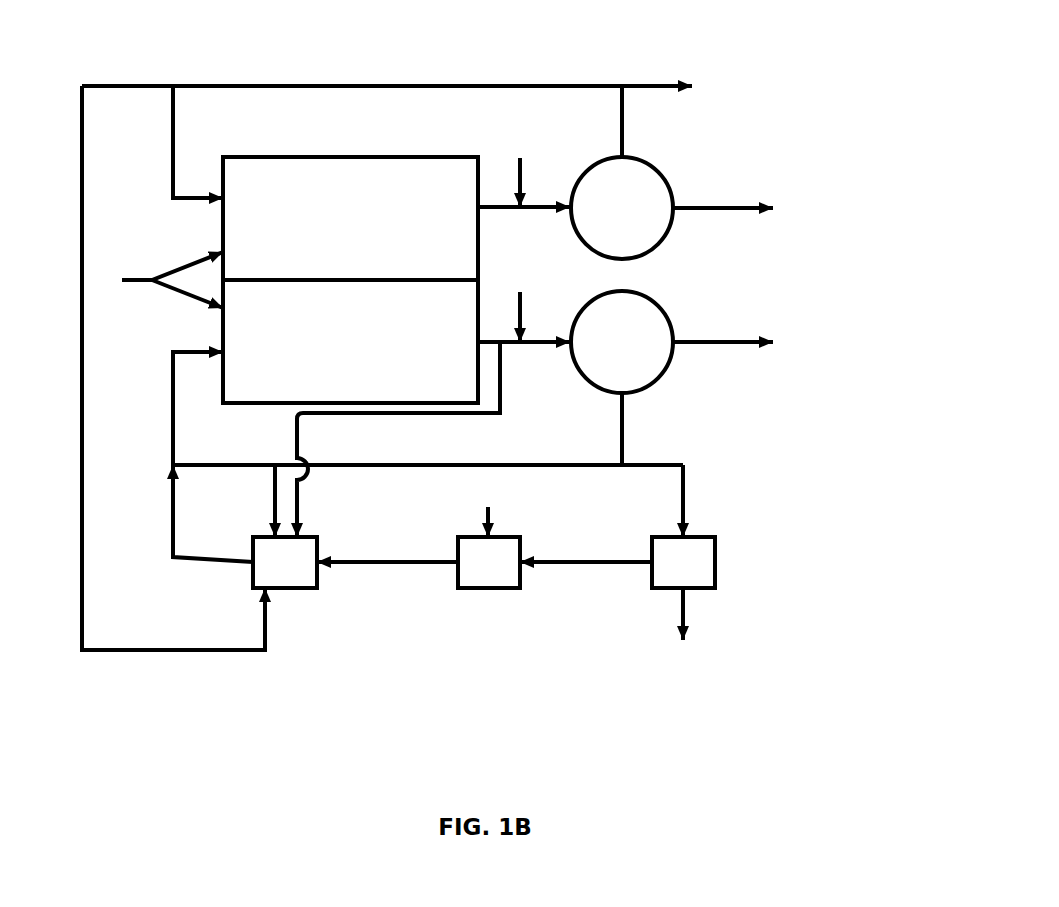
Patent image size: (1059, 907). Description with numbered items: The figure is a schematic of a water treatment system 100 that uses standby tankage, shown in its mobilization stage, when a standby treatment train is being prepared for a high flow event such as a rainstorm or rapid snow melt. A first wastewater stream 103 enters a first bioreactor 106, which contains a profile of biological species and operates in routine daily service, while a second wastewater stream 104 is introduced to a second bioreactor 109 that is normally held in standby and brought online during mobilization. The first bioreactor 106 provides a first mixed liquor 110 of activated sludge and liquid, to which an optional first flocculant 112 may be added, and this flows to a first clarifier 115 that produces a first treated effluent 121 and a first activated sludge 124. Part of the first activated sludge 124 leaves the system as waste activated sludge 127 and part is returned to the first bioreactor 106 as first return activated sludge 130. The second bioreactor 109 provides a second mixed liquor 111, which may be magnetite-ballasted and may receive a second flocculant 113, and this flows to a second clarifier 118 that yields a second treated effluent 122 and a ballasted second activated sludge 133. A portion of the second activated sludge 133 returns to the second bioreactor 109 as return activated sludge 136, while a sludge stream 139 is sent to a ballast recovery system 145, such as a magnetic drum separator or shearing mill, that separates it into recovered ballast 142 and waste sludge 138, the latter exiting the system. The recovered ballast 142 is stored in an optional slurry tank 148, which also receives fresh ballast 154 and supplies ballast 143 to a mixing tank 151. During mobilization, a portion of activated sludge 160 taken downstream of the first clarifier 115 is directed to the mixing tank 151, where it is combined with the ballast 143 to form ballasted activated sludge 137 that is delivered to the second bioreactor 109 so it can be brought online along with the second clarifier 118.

The water treatment system 100 is at (752, 132).
The first wastewater stream 103 is at (178, 265).
The second wastewater stream 104 is at (180, 297).
The first bioreactor 106 is at (308, 235).
The second bioreactor 109 is at (308, 351).
The first mixed liquor 110 is at (500, 213).
The second mixed liquor 111 is at (528, 348).
The first flocculant 112 is at (525, 163).
The second flocculant 113 is at (526, 311).
The first clarifier 115 is at (671, 193).
The second clarifier 118 is at (660, 305).
The first treated effluent 121 is at (727, 213).
The second treated effluent 122 is at (727, 347).
The first activated sludge 124 is at (626, 140).
The waste activated sludge 127 is at (660, 83).
The first return activated sludge 130 is at (375, 83).
The second activated sludge 133 is at (627, 445).
The return activated sludge 136 is at (398, 461).
The ballasted activated sludge 137 is at (175, 540).
The waste sludge 138 is at (688, 607).
The sludge stream 139 is at (688, 490).
The recovered ballast 142 is at (563, 557).
The ballast 143 is at (390, 557).
The ballast recovery system 145 is at (718, 558).
The slurry tank 148 is at (510, 592).
The mixing tank 151 is at (298, 592).
The fresh ballast 154 is at (493, 508).
The portion of activated sludge 160 is at (152, 655).